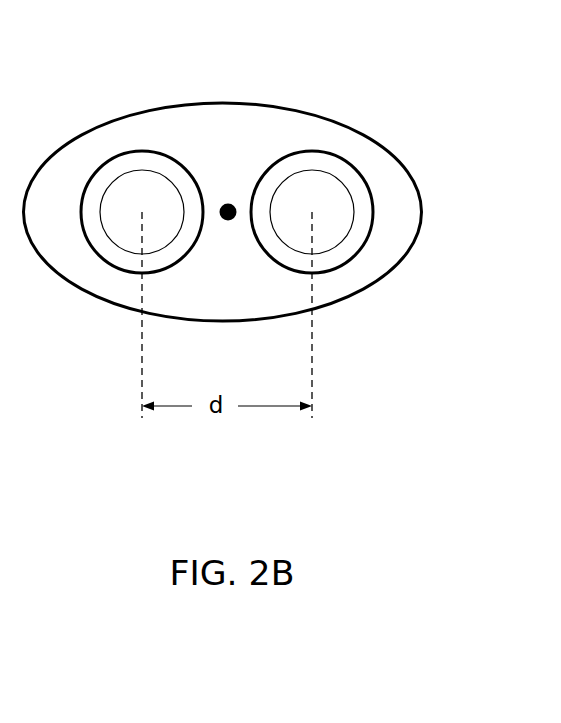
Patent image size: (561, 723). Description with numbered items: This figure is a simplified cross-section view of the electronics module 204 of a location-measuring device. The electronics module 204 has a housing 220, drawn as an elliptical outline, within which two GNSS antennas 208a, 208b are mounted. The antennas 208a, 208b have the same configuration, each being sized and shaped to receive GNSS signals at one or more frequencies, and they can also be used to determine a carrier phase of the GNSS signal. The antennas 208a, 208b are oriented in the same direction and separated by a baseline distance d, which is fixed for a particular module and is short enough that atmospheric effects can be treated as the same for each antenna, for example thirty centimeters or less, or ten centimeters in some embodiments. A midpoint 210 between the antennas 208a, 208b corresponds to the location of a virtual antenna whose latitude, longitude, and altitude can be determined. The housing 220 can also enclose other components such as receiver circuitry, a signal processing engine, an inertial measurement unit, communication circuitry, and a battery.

The electronics module 204 is at (177, 90).
The housing 220 is at (288, 108).
The GNSS antenna 208a is at (118, 152).
The GNSS antenna 208b is at (343, 158).
The midpoint 210 is at (232, 203).